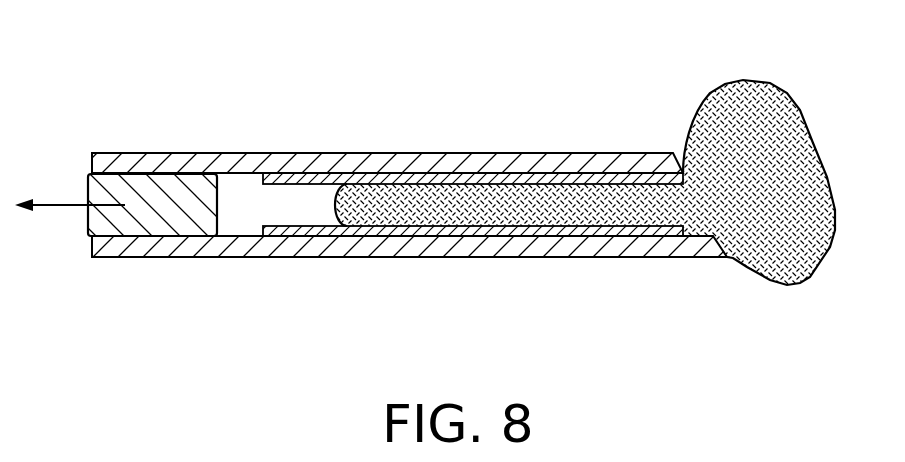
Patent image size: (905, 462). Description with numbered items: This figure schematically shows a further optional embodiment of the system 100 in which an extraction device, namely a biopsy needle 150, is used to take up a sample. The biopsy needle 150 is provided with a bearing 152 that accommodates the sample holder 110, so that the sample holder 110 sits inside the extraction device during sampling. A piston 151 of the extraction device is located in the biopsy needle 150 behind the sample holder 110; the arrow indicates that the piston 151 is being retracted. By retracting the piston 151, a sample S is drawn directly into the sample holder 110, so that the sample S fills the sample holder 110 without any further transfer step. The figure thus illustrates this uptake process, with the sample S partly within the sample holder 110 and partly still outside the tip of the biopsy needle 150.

The system 100 is at (114, 82).
The biopsy needle 150 is at (352, 128).
The piston 151 is at (158, 217).
The bearing 152 is at (620, 247).
The sample holder 110 is at (580, 165).
The sample S is at (495, 212).